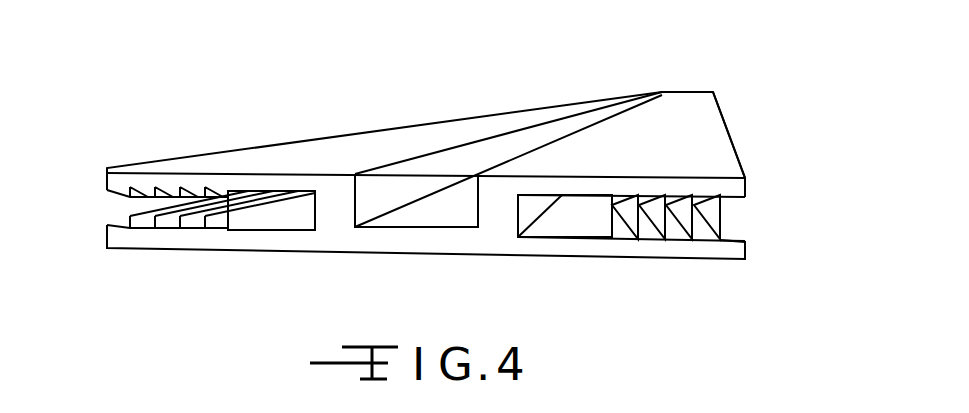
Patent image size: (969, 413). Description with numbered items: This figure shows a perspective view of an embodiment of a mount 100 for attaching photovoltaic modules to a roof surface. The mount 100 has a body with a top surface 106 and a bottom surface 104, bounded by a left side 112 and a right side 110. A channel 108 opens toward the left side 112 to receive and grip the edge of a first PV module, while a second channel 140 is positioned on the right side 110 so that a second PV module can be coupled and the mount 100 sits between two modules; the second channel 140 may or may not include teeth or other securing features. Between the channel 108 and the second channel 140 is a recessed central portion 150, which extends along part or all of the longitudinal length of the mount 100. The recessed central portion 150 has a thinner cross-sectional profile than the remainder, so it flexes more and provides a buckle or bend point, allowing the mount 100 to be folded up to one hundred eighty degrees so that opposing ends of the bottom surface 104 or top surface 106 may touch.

The mount 100 is at (748, 103).
The bottom surface 104 is at (505, 258).
The top surface 106 is at (320, 139).
The channel 108 is at (109, 207).
The right side 110 is at (746, 182).
The left side 112 is at (107, 228).
The second channel 140 is at (748, 208).
The recessed central portion 150 is at (443, 180).